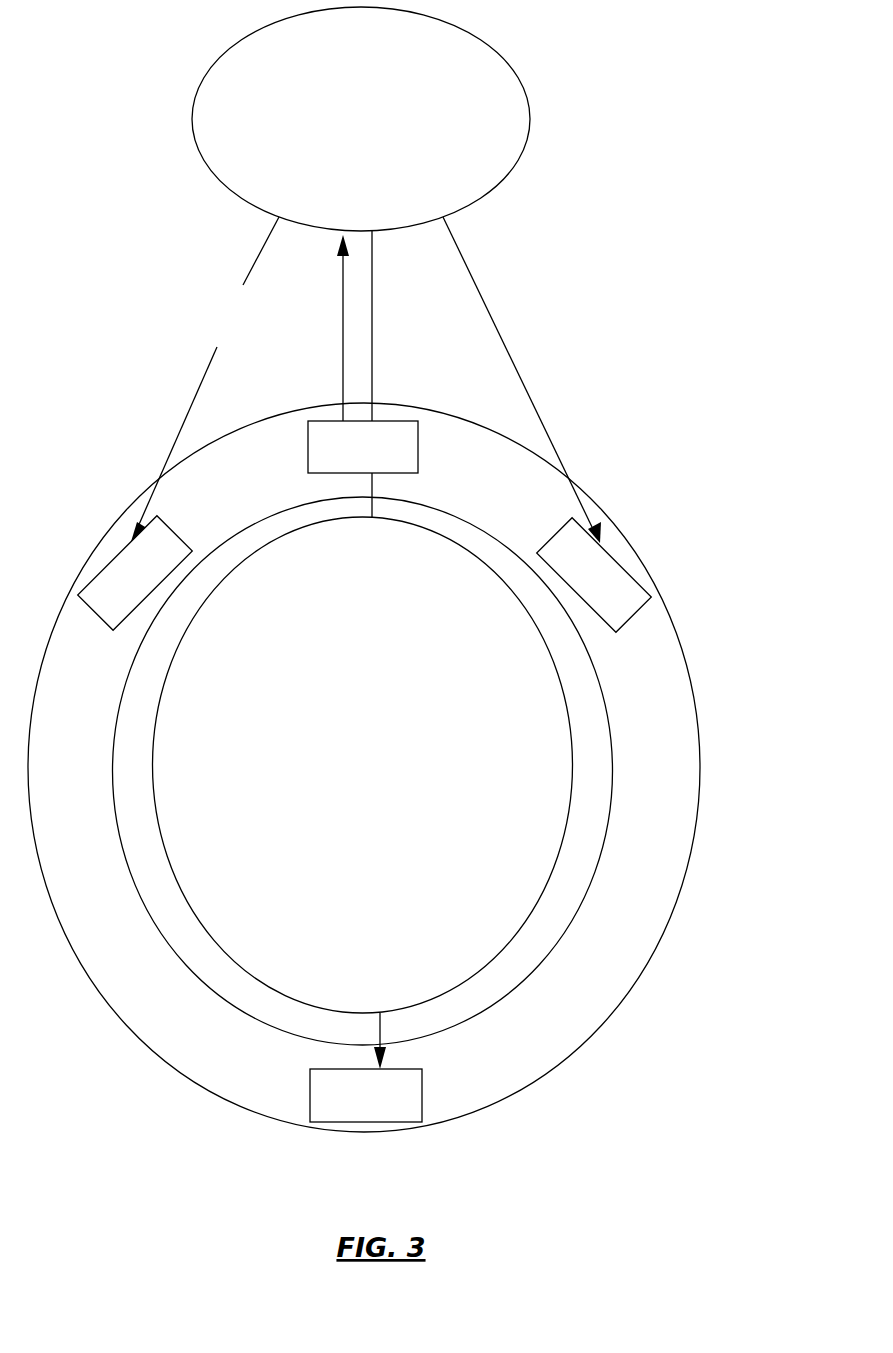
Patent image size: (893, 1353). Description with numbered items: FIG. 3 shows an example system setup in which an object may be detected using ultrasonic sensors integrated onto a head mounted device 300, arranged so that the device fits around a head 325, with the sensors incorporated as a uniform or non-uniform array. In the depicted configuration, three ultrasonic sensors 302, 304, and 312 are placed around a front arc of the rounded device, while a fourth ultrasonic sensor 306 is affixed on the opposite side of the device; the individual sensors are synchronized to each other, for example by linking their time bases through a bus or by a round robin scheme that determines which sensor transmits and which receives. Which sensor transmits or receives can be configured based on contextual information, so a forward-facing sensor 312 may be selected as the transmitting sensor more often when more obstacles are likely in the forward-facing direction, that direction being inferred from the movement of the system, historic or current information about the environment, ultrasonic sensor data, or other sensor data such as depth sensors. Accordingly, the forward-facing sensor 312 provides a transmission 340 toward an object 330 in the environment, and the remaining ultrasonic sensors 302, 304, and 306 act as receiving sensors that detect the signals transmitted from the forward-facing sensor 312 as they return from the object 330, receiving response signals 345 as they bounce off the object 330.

The head mounted device 300 is at (668, 615).
The ultrasonic sensor 302 is at (135, 573).
The ultrasonic sensor 304 is at (594, 575).
The ultrasonic sensor 306 is at (366, 1067).
The forward-facing sensor 312 is at (363, 447).
The head 325 is at (363, 765).
The object 330 is at (361, 119).
The transmission 340 is at (239, 381).
The response signals 345 is at (559, 380).